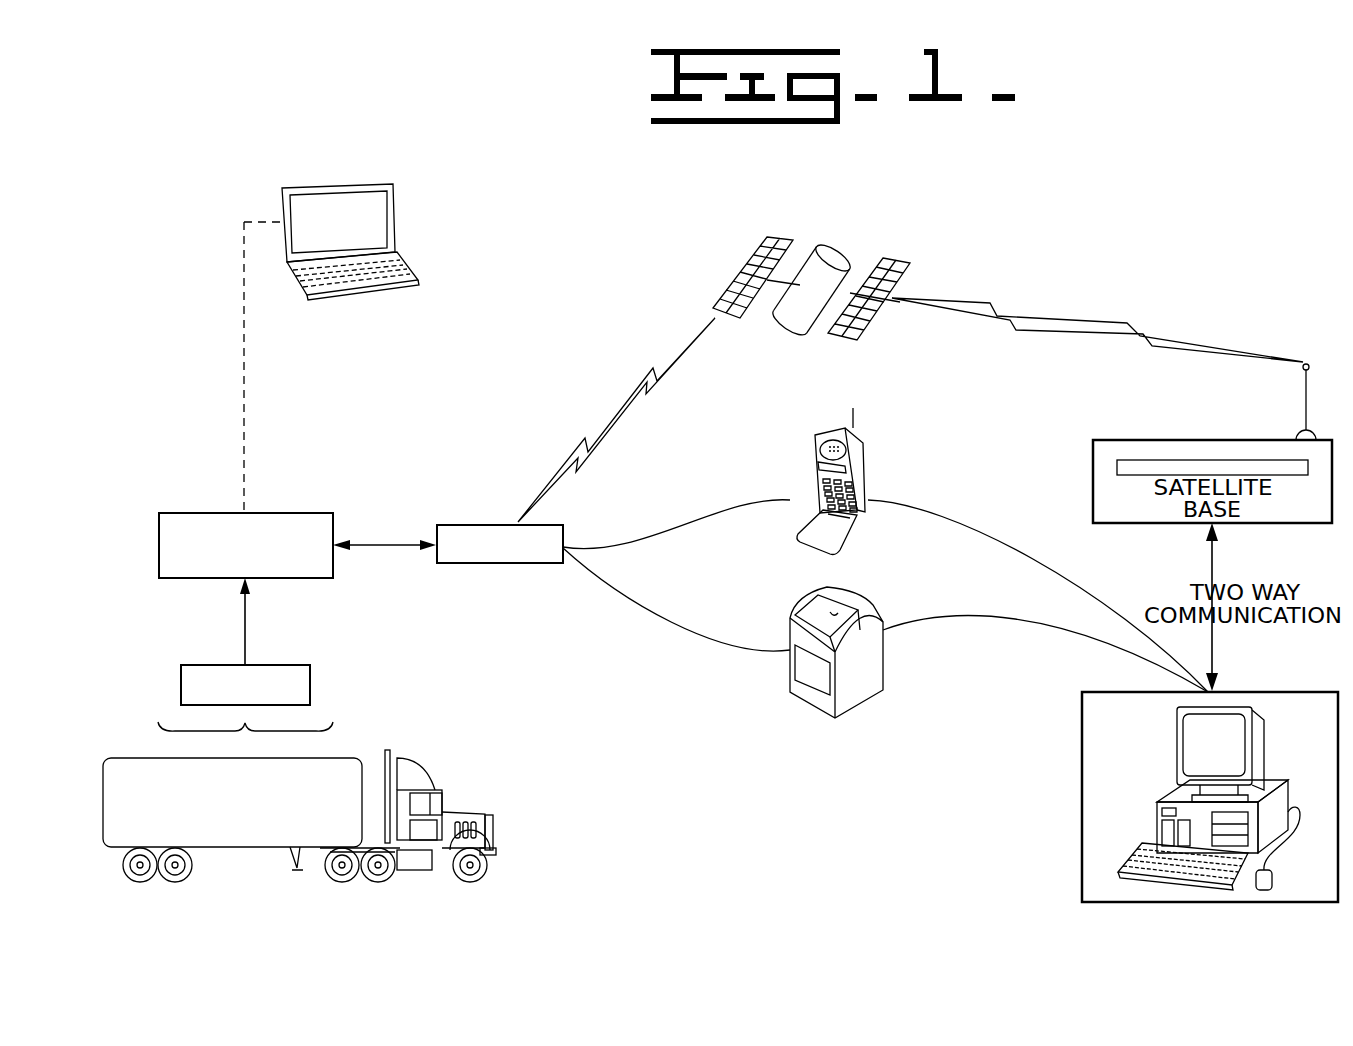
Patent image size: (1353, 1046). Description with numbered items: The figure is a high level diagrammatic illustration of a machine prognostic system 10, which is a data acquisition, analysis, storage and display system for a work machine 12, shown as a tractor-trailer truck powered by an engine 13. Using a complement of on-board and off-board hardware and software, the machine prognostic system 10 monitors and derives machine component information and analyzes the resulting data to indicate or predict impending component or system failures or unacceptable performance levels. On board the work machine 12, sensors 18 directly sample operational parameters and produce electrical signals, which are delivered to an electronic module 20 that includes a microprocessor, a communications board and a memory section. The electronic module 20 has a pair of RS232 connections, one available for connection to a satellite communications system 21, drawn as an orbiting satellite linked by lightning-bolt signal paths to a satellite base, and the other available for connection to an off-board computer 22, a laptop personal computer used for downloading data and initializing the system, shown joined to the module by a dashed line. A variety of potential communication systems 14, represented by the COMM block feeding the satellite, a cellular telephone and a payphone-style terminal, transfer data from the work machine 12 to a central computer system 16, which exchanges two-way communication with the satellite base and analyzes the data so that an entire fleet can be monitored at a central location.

The machine prognostic system 10 is at (543, 620).
The work machine 12 is at (323, 781).
The engine 13 is at (490, 802).
The communication systems 14 is at (454, 468).
The central computer system 16 is at (1082, 788).
The sensors 18 is at (364, 673).
The electronic module 20 is at (287, 513).
The satellite communications system 21 is at (892, 237).
The off-board computer 22 is at (397, 218).